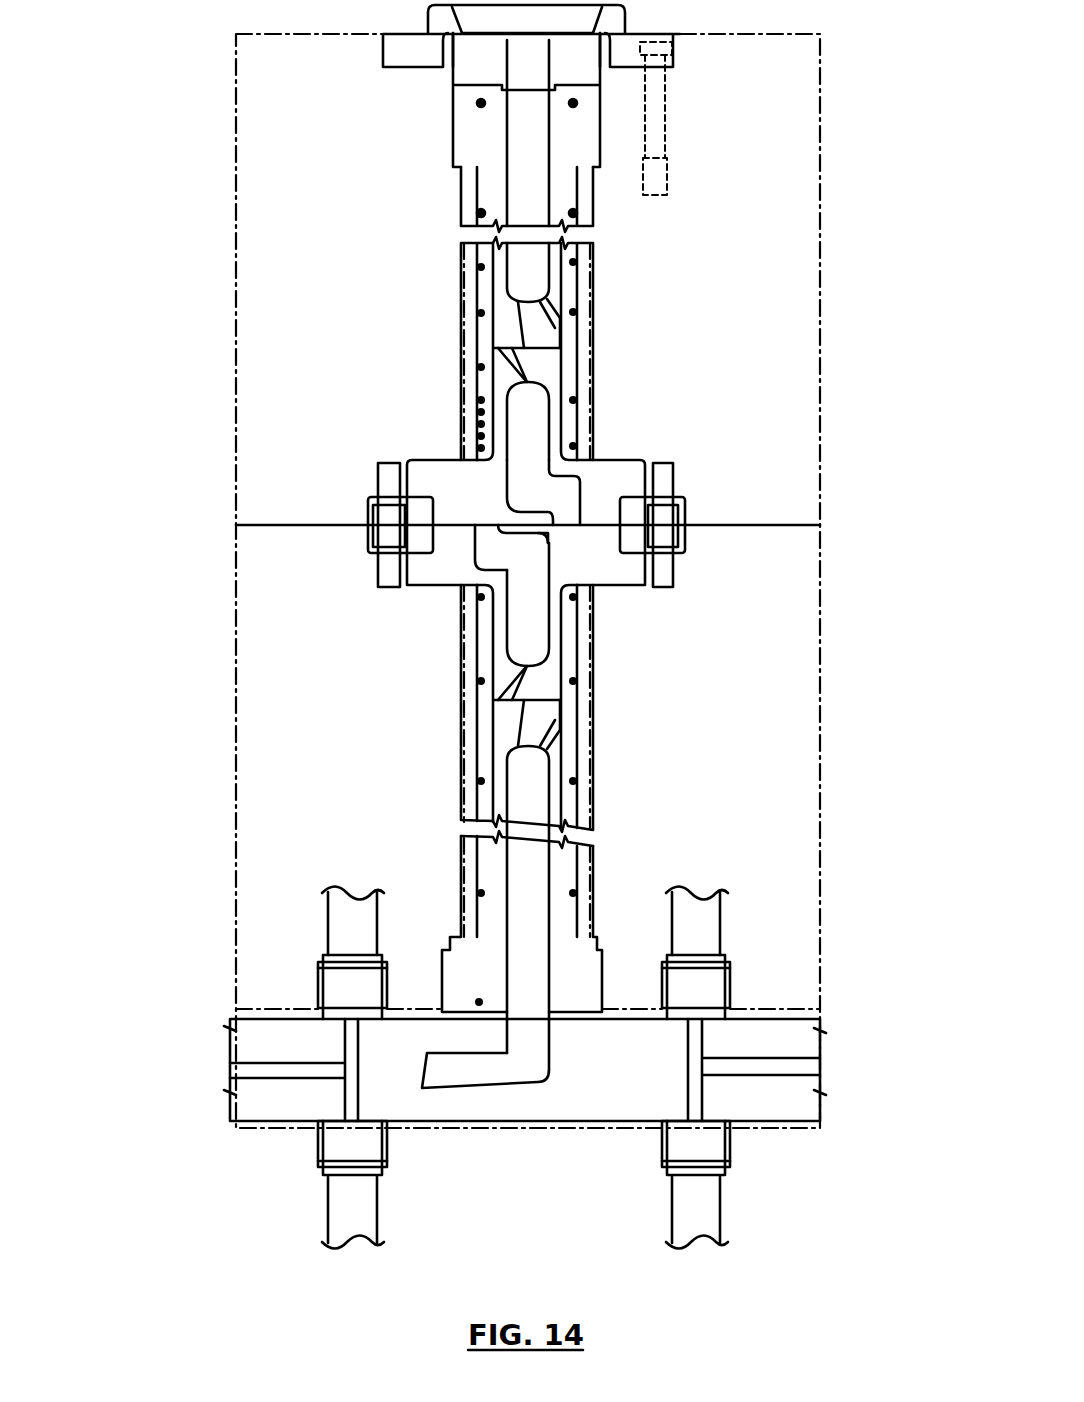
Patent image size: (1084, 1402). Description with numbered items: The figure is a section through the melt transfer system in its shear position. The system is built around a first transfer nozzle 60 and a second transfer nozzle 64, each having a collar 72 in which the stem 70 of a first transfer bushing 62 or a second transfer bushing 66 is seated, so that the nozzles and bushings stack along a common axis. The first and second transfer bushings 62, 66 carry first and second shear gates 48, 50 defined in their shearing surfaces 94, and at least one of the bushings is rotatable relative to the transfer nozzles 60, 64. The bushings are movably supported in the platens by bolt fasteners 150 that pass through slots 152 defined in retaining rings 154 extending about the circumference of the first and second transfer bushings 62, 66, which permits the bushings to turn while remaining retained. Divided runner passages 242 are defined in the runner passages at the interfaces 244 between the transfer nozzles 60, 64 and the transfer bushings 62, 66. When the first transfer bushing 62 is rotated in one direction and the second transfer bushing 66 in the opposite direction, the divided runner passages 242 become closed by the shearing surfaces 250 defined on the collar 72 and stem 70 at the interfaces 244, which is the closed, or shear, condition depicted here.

The first shear gate 48 is at (569, 527).
The second shear gate 50 is at (477, 522).
The first transfer nozzle 60 is at (565, 197).
The first transfer bushing 62 is at (639, 472).
The second transfer nozzle 64 is at (560, 792).
The second transfer bushing 66 is at (632, 572).
The stem 70 is at (548, 363).
The collar 72 is at (571, 384).
The shearing surface 94 is at (594, 522).
The bolt fastener 150 is at (663, 470).
The slot 152 is at (380, 497).
The retaining ring 154 is at (684, 502).
The divided runner passage 242 is at (557, 328).
The interface 244 is at (500, 347).
The shearing surface 250 is at (523, 348).